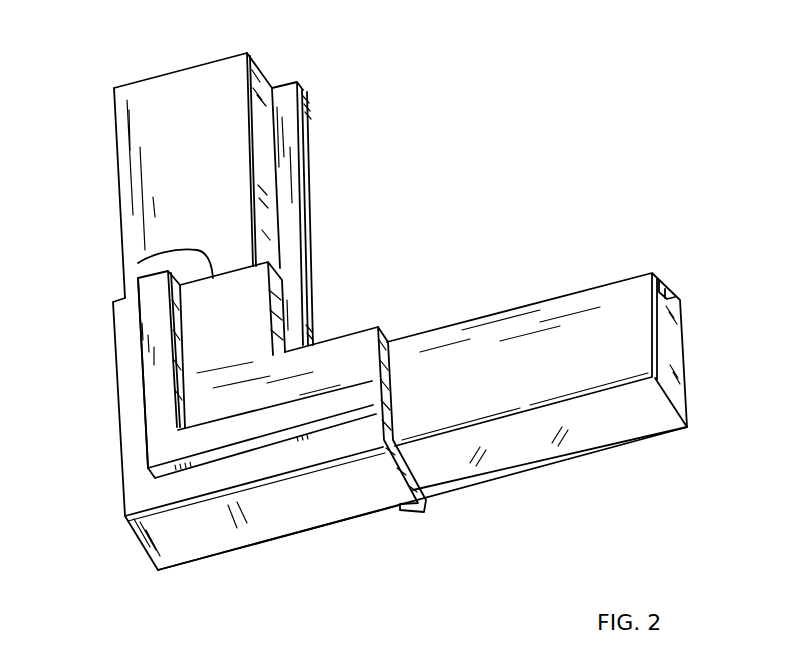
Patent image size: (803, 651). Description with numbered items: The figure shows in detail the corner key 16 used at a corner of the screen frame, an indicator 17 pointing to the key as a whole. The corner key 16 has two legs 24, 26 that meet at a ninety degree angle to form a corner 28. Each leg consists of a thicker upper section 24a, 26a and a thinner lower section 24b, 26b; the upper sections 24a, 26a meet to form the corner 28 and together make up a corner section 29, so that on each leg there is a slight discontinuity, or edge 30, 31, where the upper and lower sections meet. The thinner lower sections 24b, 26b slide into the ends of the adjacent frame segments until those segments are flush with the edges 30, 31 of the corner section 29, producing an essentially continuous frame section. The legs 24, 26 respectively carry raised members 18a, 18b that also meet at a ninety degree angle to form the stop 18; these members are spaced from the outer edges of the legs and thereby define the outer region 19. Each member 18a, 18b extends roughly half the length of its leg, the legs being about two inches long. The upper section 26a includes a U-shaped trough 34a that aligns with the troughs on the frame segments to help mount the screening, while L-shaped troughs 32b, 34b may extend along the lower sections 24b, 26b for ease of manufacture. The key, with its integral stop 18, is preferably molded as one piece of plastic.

The corner key 16 is at (514, 238).
The corner joint 17 is at (98, 427).
The stop 18 is at (138, 337).
The raised member 18a is at (333, 407).
The raised member 18b is at (153, 373).
The outer region 19 is at (132, 464).
The leg 24 is at (675, 352).
The upper section 24a is at (307, 496).
The lower section 24b is at (615, 435).
The leg 26 is at (163, 77).
The upper section 26a is at (307, 272).
The lower section 26b is at (121, 121).
The corner 28 is at (143, 553).
The corner section 29 is at (192, 599).
The edge 30 is at (396, 388).
The edge 31 is at (138, 263).
The L-shaped trough 32b is at (668, 290).
The U-shaped trough 34a is at (295, 327).
The L-shaped trough 34b is at (290, 214).